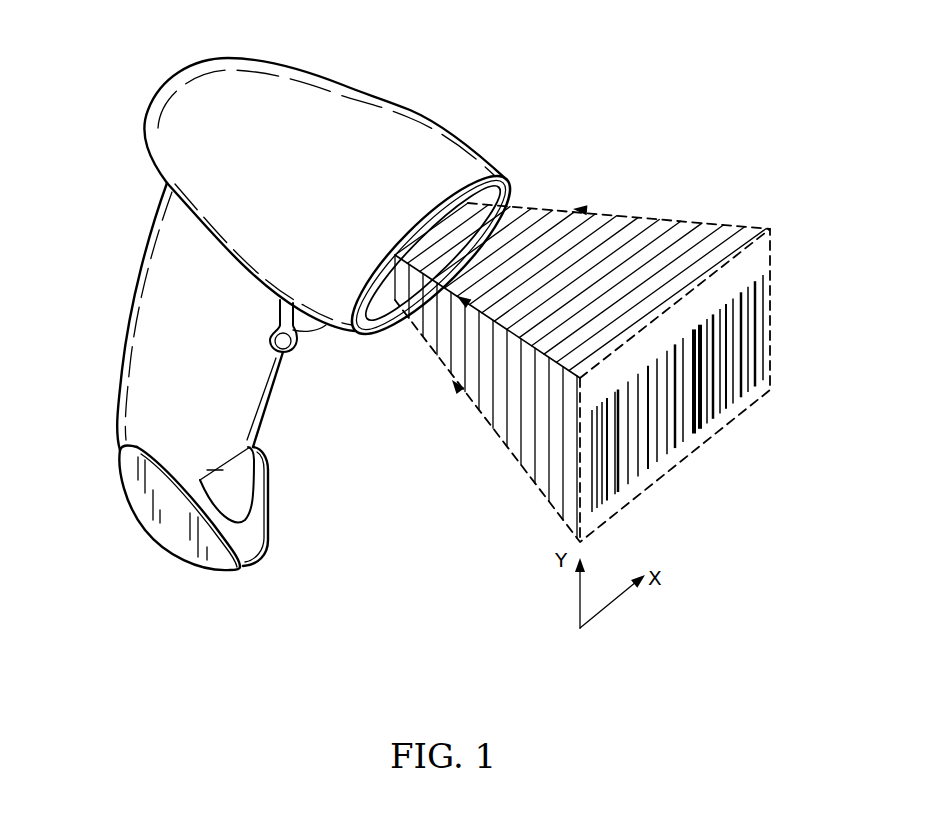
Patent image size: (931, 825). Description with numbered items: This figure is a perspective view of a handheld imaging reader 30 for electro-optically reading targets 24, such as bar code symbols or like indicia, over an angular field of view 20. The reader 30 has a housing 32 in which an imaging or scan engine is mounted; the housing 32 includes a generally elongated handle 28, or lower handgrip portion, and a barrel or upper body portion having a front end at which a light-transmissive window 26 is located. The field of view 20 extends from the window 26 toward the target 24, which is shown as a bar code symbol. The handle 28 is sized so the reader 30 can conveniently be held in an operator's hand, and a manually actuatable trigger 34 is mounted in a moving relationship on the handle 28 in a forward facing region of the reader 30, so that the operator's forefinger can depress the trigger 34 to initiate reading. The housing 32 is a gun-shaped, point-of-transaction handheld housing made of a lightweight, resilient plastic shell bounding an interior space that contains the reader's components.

The field of view 20 is at (667, 235).
The target 24 is at (772, 307).
The light-transmissive window 26 is at (385, 313).
The handle 28 is at (123, 350).
The handheld imaging reader 30 is at (98, 272).
The housing 32 is at (300, 82).
The trigger 34 is at (316, 329).